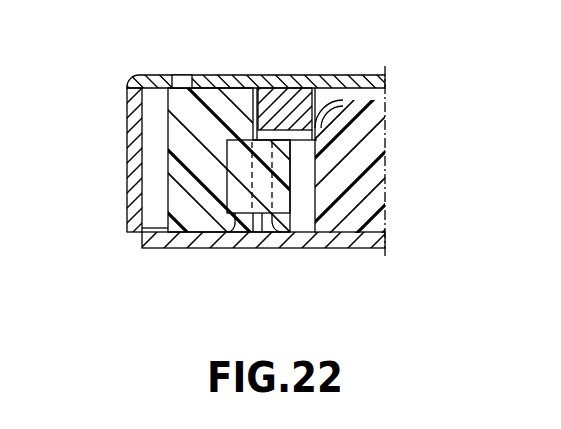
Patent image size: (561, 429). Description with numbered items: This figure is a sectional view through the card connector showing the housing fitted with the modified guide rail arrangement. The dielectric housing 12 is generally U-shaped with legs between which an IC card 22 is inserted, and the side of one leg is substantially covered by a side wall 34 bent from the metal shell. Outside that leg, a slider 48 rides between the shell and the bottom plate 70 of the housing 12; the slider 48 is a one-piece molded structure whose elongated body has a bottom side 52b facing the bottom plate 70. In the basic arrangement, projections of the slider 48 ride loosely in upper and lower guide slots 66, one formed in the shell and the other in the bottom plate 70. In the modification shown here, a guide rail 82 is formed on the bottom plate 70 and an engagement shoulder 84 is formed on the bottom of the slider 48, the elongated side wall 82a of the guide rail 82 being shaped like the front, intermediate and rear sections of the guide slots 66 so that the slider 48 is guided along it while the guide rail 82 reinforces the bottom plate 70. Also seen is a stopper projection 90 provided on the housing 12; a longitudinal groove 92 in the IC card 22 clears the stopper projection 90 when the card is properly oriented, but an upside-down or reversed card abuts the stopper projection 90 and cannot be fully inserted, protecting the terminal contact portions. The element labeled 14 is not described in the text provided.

The dielectric housing 12 is at (350, 254).
The top plate 14 is at (340, 72).
The IC card 22 is at (363, 186).
The side wall 34 is at (128, 183).
The slider 48 is at (172, 142).
The bottom side 52b is at (176, 238).
The guide slots 66 is at (178, 78).
The bottom plate 70 is at (163, 241).
The guide rail 82 is at (251, 243).
The elongated side wall 82a is at (242, 243).
The engagement shoulder 84 is at (221, 242).
The stopper projection 90 is at (283, 87).
The longitudinal groove 92 is at (343, 100).